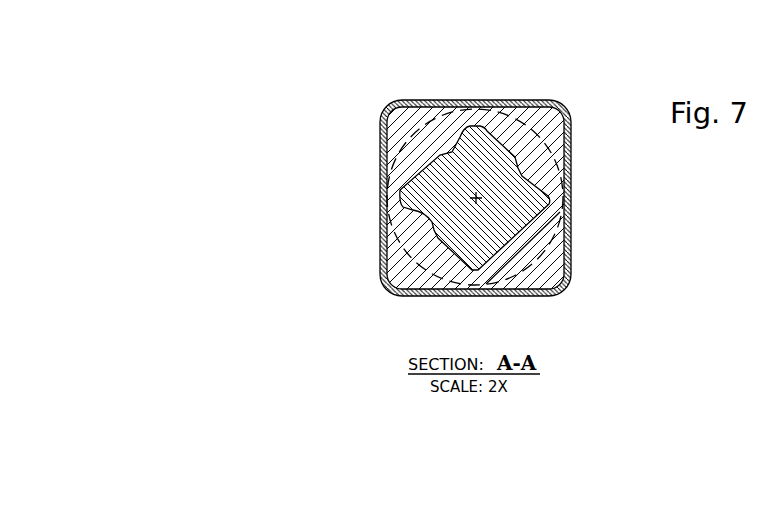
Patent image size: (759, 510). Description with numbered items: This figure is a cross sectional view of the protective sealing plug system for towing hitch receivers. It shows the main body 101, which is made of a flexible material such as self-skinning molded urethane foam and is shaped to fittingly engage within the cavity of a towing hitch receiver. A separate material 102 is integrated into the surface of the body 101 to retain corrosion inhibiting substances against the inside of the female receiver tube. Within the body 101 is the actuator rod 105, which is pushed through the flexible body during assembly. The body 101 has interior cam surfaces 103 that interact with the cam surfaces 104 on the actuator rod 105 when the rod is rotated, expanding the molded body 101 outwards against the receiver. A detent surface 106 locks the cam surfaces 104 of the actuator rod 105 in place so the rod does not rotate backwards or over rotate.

The main body 101 is at (557, 138).
The separate material 102 is at (577, 204).
The interior cam surfaces 103 is at (411, 163).
The cam surfaces 104 is at (392, 201).
The actuator rod 105 is at (510, 232).
The detent surface 106 is at (520, 146).